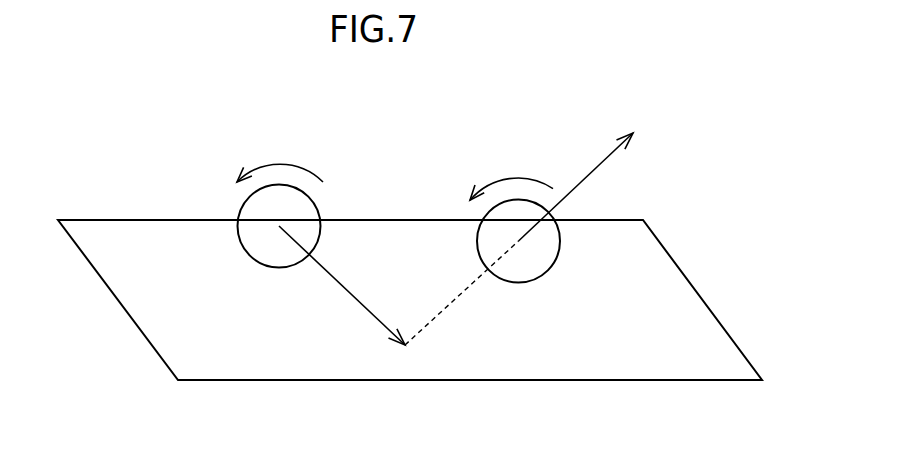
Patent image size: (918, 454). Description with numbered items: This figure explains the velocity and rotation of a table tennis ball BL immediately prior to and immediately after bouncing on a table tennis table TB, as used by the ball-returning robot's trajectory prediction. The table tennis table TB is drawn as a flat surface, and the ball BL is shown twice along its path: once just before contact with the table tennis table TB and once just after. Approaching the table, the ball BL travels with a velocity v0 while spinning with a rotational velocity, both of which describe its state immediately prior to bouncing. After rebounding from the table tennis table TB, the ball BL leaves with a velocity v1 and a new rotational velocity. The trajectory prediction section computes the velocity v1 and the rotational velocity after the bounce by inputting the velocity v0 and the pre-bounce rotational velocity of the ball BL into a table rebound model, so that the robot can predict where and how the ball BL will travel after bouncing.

The table tennis table TB is at (677, 325).
The ball BL is at (273, 257).
The velocity immediately prior to bouncing v0 is at (342, 285).
The velocity immediately after bouncing v1 is at (519, 239).